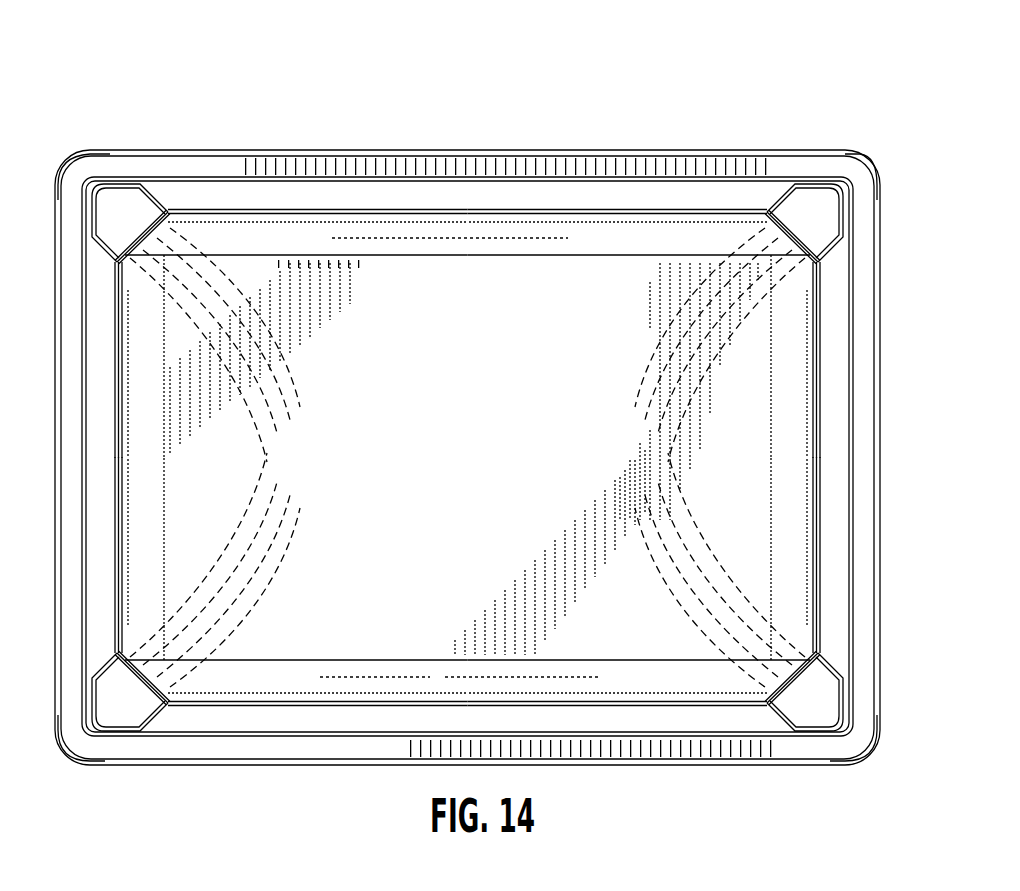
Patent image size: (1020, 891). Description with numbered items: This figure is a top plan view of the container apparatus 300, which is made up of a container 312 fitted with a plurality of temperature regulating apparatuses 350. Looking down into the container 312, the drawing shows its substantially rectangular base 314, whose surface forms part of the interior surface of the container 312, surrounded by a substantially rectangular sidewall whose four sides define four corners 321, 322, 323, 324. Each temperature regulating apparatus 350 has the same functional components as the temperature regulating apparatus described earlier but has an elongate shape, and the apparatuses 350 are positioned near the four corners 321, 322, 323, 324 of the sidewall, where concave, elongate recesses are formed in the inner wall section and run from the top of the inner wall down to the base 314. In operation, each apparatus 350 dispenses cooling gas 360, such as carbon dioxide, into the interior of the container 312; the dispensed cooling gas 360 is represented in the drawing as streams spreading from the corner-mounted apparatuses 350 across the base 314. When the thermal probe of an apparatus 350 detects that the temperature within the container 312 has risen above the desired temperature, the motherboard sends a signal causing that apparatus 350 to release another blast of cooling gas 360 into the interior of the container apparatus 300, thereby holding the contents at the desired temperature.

The container apparatus 300 is at (80, 88).
The container 312 is at (522, 147).
The base 314 is at (598, 303).
The corner 321 is at (70, 197).
The corner 322 is at (862, 175).
The corner 323 is at (853, 740).
The corner 324 is at (78, 737).
The temperature regulating apparatus 350 is at (110, 228).
The cooling gas 360 is at (222, 268).